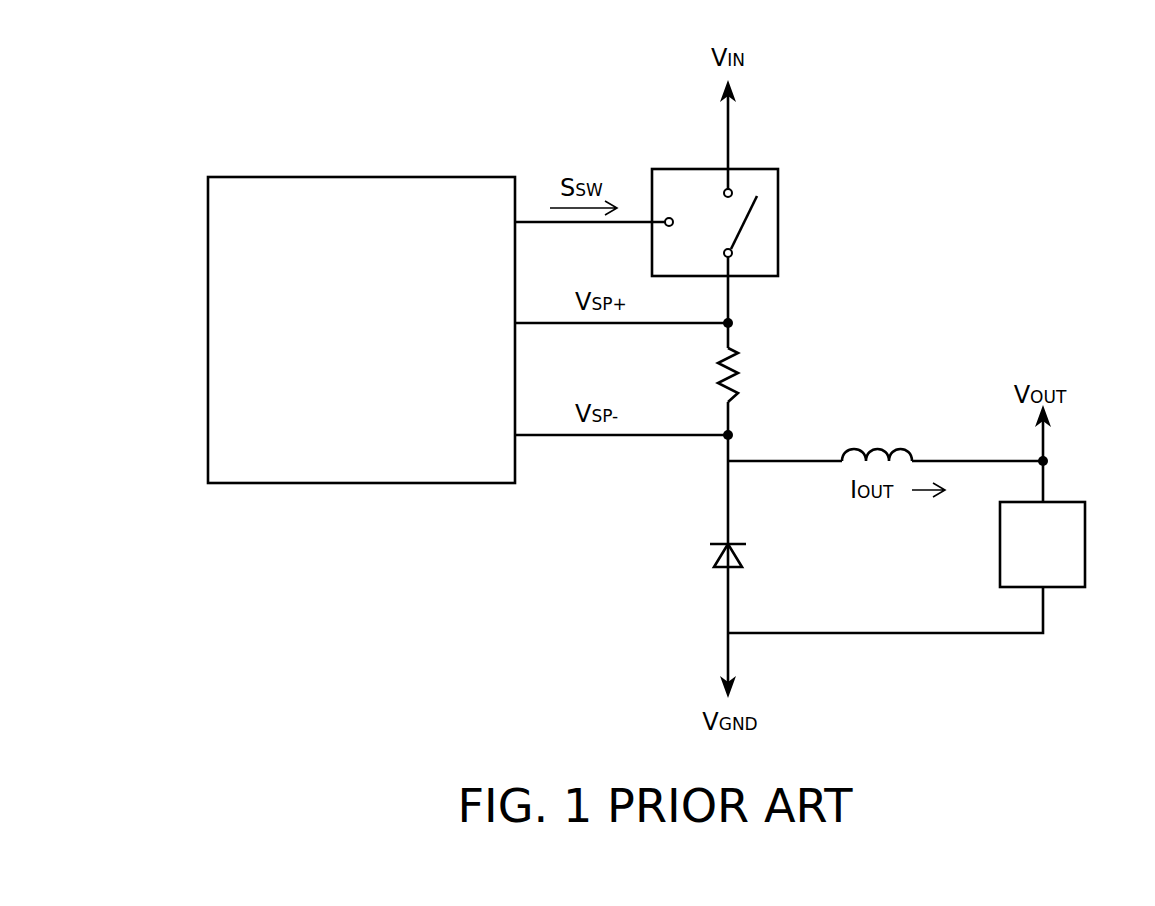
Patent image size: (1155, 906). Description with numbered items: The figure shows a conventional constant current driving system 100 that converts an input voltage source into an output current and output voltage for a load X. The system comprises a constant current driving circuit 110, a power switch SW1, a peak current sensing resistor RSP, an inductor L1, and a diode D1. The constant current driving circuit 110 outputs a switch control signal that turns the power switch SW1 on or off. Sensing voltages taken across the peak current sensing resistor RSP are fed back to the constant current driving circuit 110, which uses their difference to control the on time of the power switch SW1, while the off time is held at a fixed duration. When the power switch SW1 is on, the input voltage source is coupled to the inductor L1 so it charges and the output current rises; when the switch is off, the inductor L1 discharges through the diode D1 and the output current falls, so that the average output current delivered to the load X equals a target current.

The constant current driving system 100 is at (990, 83).
The constant current driving circuit 110 is at (360, 177).
The power switch SW1 is at (778, 222).
The peak current sensing resistor RSP is at (756, 375).
The inductor L1 is at (880, 440).
The diode D1 is at (748, 556).
The load X is at (1085, 560).